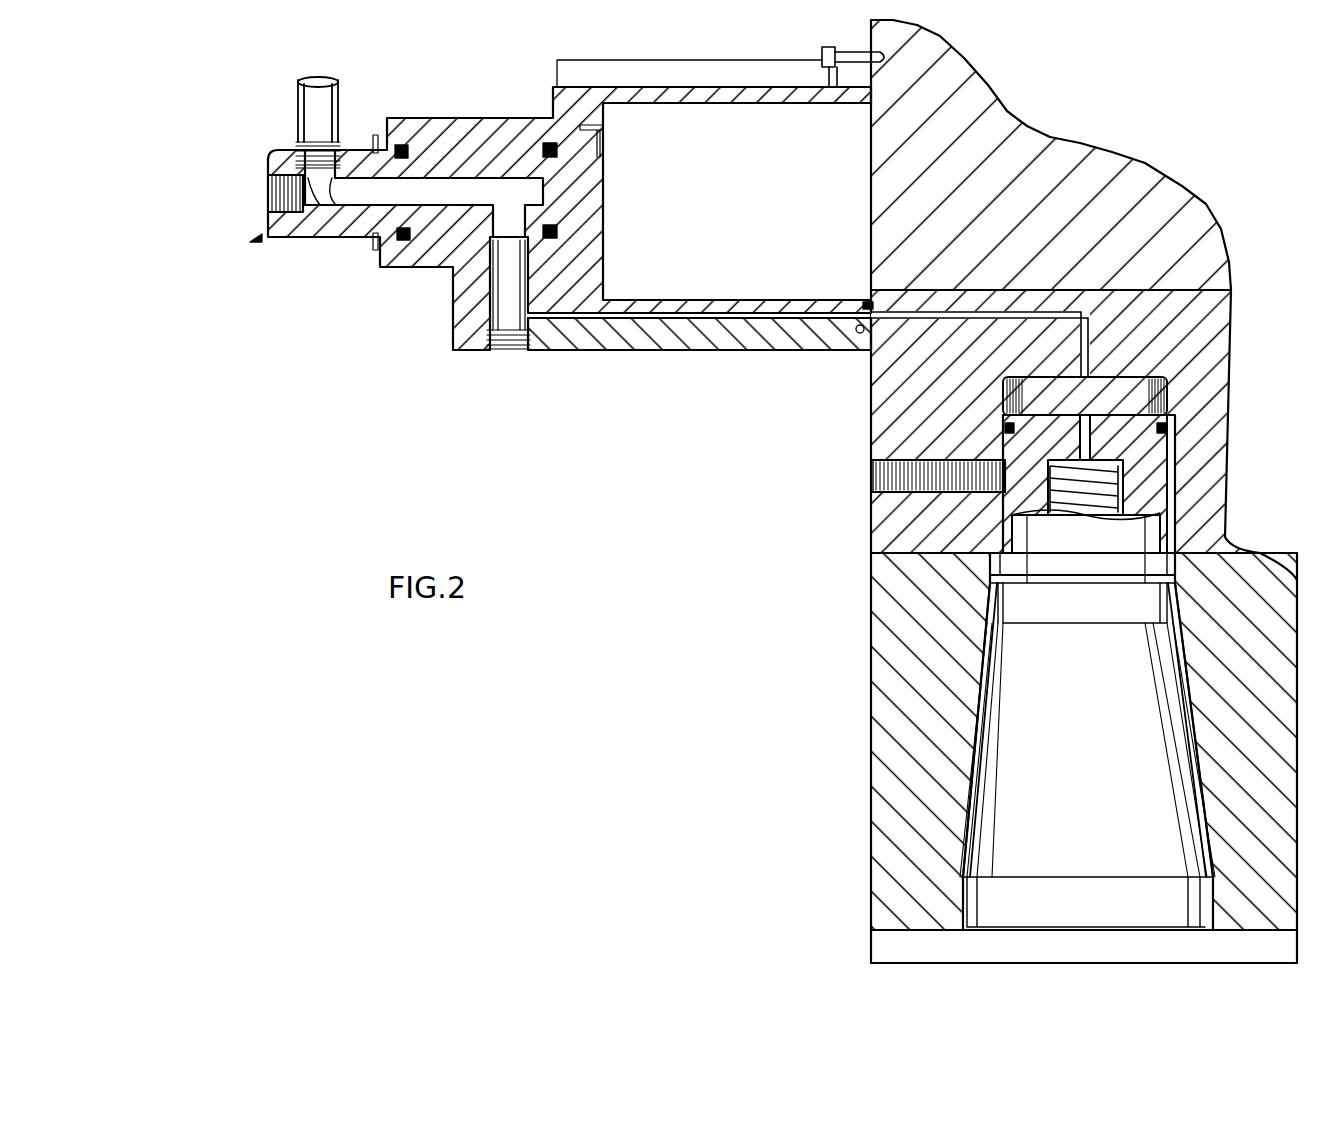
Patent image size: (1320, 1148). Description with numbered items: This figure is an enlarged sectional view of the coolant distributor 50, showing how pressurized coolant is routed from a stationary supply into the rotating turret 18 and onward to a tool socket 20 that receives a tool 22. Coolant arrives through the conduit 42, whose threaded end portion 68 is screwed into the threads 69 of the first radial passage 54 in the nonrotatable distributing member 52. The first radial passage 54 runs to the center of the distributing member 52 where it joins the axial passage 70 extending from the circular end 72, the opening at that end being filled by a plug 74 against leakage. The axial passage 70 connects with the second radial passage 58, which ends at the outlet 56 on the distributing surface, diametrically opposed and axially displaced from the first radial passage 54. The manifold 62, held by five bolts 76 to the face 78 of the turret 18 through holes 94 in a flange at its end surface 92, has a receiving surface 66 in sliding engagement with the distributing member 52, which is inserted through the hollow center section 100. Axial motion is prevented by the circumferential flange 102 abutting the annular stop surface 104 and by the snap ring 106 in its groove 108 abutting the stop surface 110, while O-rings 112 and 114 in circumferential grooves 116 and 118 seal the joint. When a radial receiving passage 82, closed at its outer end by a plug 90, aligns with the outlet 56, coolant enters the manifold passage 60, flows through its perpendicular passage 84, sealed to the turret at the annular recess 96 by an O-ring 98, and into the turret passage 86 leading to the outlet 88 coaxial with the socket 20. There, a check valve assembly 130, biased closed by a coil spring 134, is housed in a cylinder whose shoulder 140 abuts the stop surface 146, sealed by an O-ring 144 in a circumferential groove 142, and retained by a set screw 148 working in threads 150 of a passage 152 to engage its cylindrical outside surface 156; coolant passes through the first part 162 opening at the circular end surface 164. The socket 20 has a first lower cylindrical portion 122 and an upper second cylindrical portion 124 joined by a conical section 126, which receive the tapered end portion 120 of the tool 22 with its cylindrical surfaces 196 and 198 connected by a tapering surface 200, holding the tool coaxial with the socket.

The turret 18 is at (862, 443).
The tool socket 20 is at (1165, 690).
The tool 22 is at (977, 675).
The conduit 42 is at (298, 100).
The valve assembly 50 is at (463, 400).
The distributing member 52 is at (252, 240).
The first radial passage 54 is at (357, 183).
The outlet 56 is at (552, 232).
The second radial passage 58 is at (517, 220).
The radial passage 60 is at (488, 310).
The manifold 62 is at (448, 356).
The receiving surface 66 is at (440, 236).
The threaded end portion 68 is at (300, 150).
The threads 69 is at (292, 175).
The axial passage 70 is at (357, 190).
The circular end 72 is at (265, 234).
The plug 74 is at (272, 190).
The bolt 76 is at (272, 203).
The face 78 is at (871, 135).
The first portion 82 is at (512, 282).
The passage 84 is at (666, 320).
The turret passage 86 is at (871, 393).
The outlet 88 is at (1081, 385).
The plug 90 is at (505, 352).
The end surface 92 is at (858, 48).
The hole 94 is at (882, 60).
The port 96 is at (858, 333).
The O-ring 98 is at (873, 303).
The hollow cylindrical center section 100 is at (752, 274).
The circumferential flange 102 is at (605, 135).
The annular stop surface 104 is at (603, 128).
The snap ring 106 is at (376, 140).
The groove 108 is at (375, 250).
The stop surface 110 is at (376, 255).
The O-ring 112 is at (405, 147).
The O-ring 114 is at (548, 145).
The circumferential groove 116 is at (378, 135).
The circumferential groove 118 is at (540, 150).
The tapered end portion 120 is at (973, 747).
The first lower cylindrical portion 122 is at (1208, 894).
The upper second cylindrical portion 124 is at (1168, 612).
The conical section 126 is at (1170, 743).
The check valve assembly 130 is at (1180, 448).
The coil spring 134 is at (1122, 476).
The shoulder 140 is at (1215, 553).
The circumferential groove 142 is at (1125, 395).
The O-ring 144 is at (1170, 418).
The stop surface 146 is at (1180, 560).
The set screw 148 is at (893, 483).
The threads 150 is at (880, 500).
The passage 152 is at (876, 472).
The cylindrical outside surface 156 is at (1120, 502).
The first part 162 is at (1095, 375).
The circular end surface 164 is at (1003, 387).
The cylindrical surface 196 is at (962, 895).
The cylindrical surface 198 is at (980, 590).
The tapering surface 200 is at (977, 710).